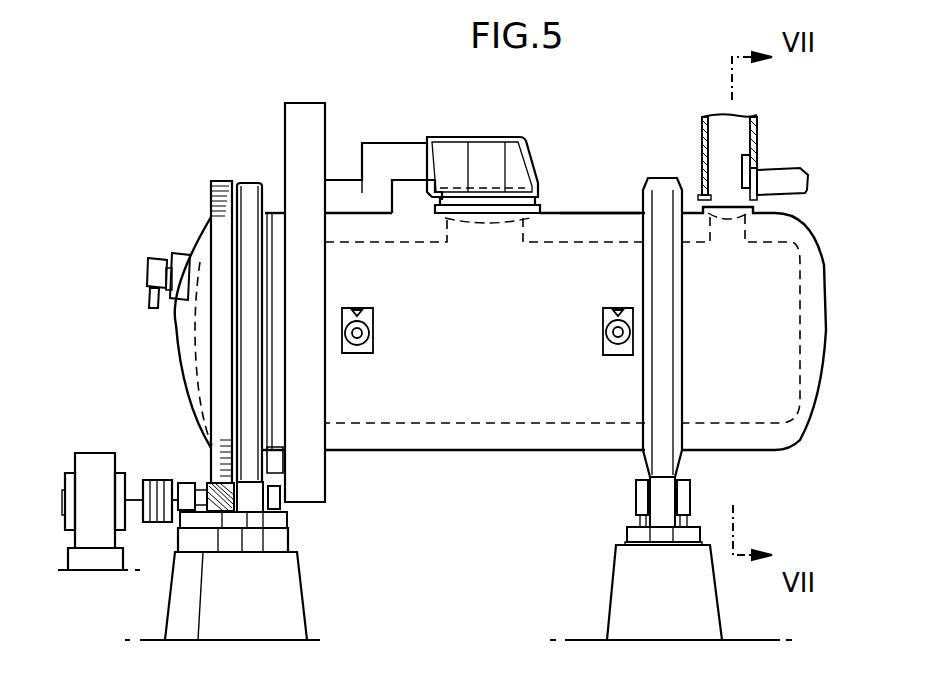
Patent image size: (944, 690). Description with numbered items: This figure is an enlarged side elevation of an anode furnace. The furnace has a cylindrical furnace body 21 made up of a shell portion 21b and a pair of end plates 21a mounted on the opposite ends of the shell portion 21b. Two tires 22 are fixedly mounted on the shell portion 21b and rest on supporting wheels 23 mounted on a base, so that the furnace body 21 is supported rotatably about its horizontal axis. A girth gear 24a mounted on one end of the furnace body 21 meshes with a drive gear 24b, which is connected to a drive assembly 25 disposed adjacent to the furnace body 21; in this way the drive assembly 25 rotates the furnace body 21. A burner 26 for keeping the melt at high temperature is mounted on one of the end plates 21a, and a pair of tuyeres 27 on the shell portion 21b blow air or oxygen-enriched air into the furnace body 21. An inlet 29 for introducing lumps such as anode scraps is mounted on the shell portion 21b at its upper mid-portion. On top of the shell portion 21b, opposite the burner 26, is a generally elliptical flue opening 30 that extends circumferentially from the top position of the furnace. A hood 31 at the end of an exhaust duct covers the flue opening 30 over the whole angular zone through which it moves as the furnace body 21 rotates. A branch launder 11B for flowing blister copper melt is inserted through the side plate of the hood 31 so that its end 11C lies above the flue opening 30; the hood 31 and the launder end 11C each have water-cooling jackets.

The furnace body 21 is at (500, 458).
The end plate 21a is at (178, 340).
The shell portion 21b is at (580, 211).
The tire 22 is at (250, 182).
The supporting wheel 23 is at (252, 492).
The girth gear 24a is at (215, 181).
The drive gear 24b is at (215, 484).
The drive assembly 25 is at (95, 452).
The burner 26 is at (150, 270).
The tuyere 27 is at (358, 328).
The inlet 29 is at (489, 178).
The flue opening 30 is at (720, 196).
The hood 31 is at (758, 117).
The branch launder 11B is at (796, 191).
The end of the launder 11C is at (752, 160).